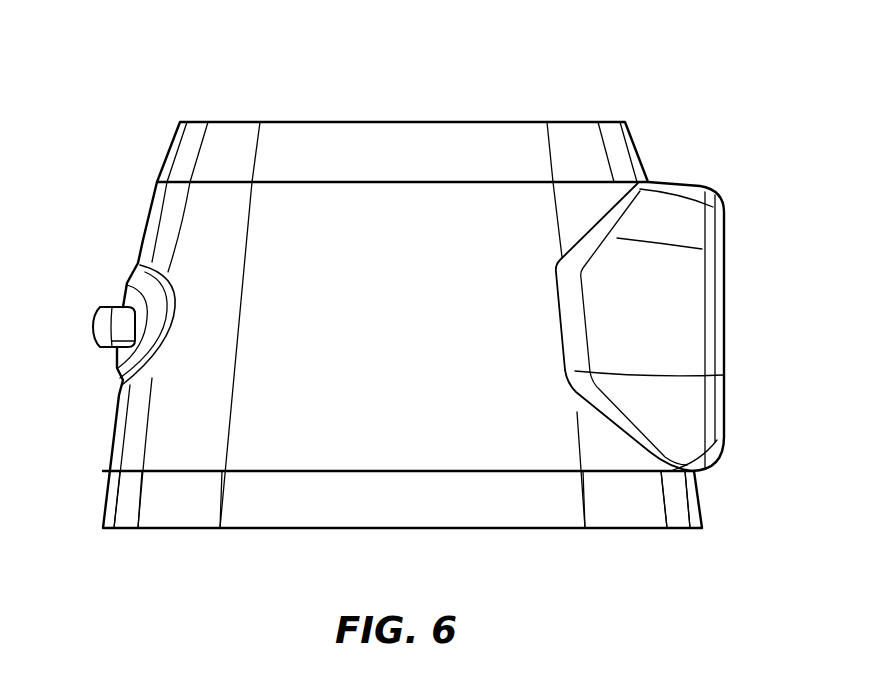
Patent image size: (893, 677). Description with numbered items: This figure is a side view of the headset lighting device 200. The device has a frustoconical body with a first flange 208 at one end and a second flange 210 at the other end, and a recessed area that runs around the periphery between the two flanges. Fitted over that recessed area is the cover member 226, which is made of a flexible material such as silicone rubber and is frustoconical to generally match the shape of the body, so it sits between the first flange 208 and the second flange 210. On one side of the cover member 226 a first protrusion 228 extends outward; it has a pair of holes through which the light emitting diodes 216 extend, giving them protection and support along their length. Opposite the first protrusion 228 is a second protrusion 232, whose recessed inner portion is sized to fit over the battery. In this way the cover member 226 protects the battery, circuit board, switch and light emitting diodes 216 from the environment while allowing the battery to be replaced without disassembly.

The lighting device 200 is at (632, 74).
The first flange 208 is at (178, 148).
The second flange 210 is at (110, 513).
The light emitting diodes 216 is at (107, 332).
The cover member 226 is at (423, 343).
The first protrusion 228 is at (127, 283).
The second protrusion 232 is at (722, 273).